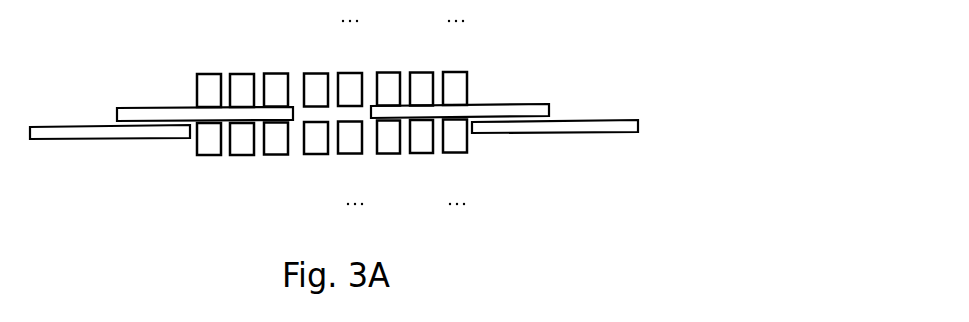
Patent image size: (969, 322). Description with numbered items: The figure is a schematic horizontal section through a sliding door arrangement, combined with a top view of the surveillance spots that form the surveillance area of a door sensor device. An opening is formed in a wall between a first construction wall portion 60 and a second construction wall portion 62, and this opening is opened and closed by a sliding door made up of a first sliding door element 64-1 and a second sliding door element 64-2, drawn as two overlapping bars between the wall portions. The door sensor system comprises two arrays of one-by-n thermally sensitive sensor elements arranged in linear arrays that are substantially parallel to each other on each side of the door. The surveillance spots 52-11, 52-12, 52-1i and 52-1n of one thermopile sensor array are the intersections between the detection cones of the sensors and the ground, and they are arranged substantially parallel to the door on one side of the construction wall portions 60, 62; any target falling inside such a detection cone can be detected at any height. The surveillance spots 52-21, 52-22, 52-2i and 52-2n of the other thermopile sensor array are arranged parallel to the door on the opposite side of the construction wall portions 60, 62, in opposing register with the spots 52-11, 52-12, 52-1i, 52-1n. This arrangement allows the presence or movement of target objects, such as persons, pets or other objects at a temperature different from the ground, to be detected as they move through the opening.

The surveillance spot 52-21 is at (208, 76).
The surveillance spot 52-22 is at (240, 76).
The surveillance spot 52-2i is at (352, 72).
The surveillance spot 52-2n is at (452, 72).
The surveillance spot 52-11 is at (210, 152).
The surveillance spot 52-12 is at (245, 152).
The surveillance spot 52-1i is at (352, 152).
The surveillance spot 52-1n is at (453, 152).
The first sliding door element 64-1 is at (138, 115).
The second sliding door element 64-2 is at (522, 110).
The first construction wall portion 60 is at (67, 135).
The second construction wall portion 62 is at (585, 128).